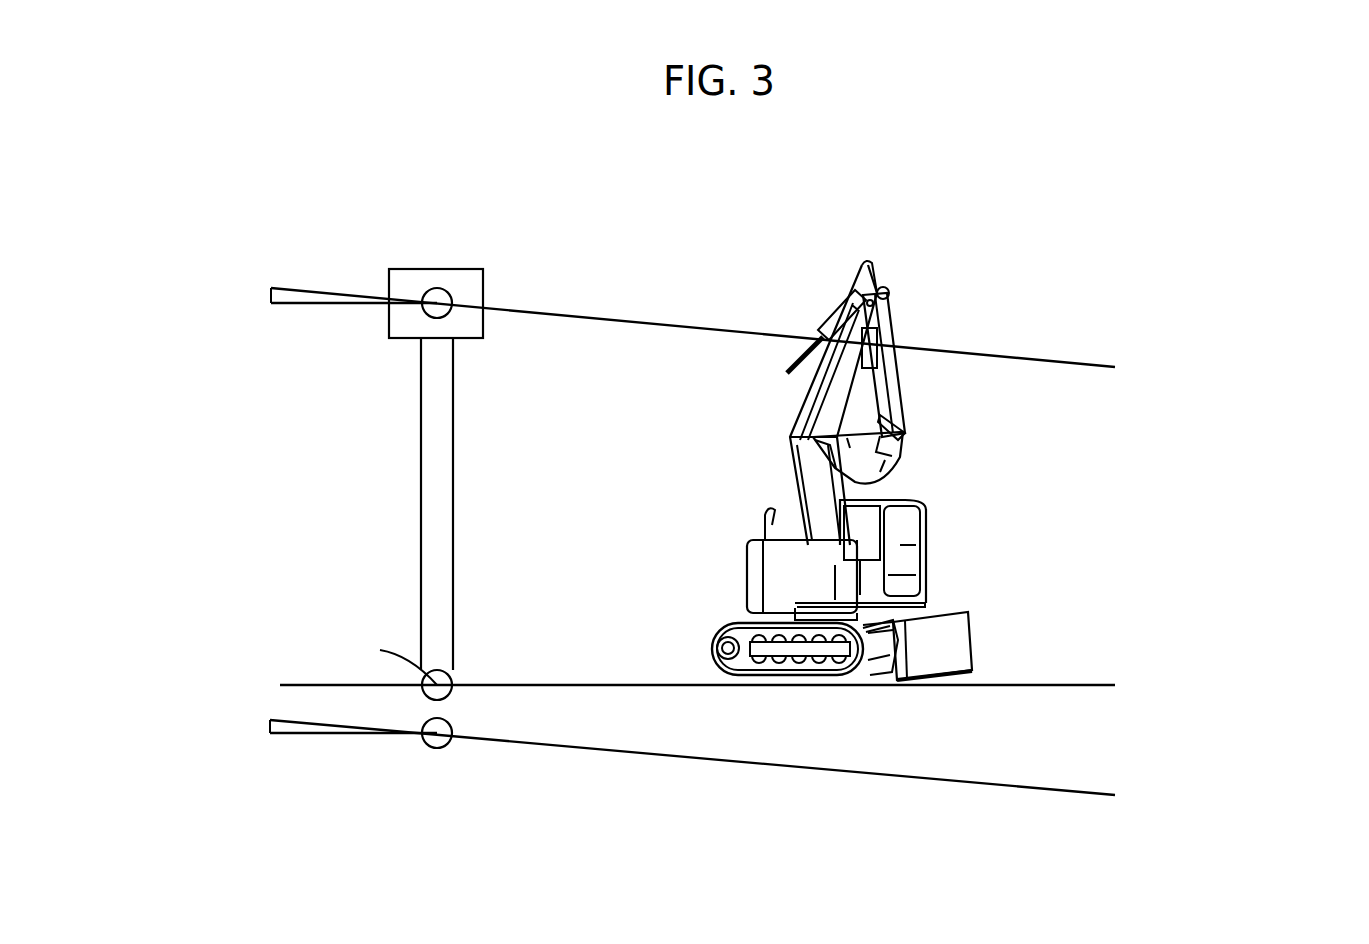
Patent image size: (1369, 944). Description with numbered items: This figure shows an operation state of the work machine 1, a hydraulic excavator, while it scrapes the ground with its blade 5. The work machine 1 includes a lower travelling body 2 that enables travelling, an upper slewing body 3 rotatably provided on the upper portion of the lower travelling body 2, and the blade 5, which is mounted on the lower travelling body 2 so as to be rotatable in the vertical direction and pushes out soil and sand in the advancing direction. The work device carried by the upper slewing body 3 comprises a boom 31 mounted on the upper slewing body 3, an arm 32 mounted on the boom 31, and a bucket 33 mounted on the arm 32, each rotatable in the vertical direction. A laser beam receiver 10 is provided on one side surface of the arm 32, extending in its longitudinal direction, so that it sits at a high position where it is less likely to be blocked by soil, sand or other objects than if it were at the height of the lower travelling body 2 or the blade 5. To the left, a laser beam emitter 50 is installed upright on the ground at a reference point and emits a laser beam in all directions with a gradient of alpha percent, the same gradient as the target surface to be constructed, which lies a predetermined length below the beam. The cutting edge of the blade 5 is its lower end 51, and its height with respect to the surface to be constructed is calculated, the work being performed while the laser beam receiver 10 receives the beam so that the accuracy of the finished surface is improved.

The work machine 1 is at (762, 262).
The laser beam receiver 10 is at (885, 318).
The lower travelling body 2 is at (712, 638).
The upper slewing body 3 is at (752, 573).
The boom 31 is at (788, 457).
The arm 32 is at (877, 397).
The bucket 33 is at (877, 472).
The blade 5 is at (967, 653).
The lower end 51 is at (953, 682).
The laser beam emitter 50 is at (459, 269).